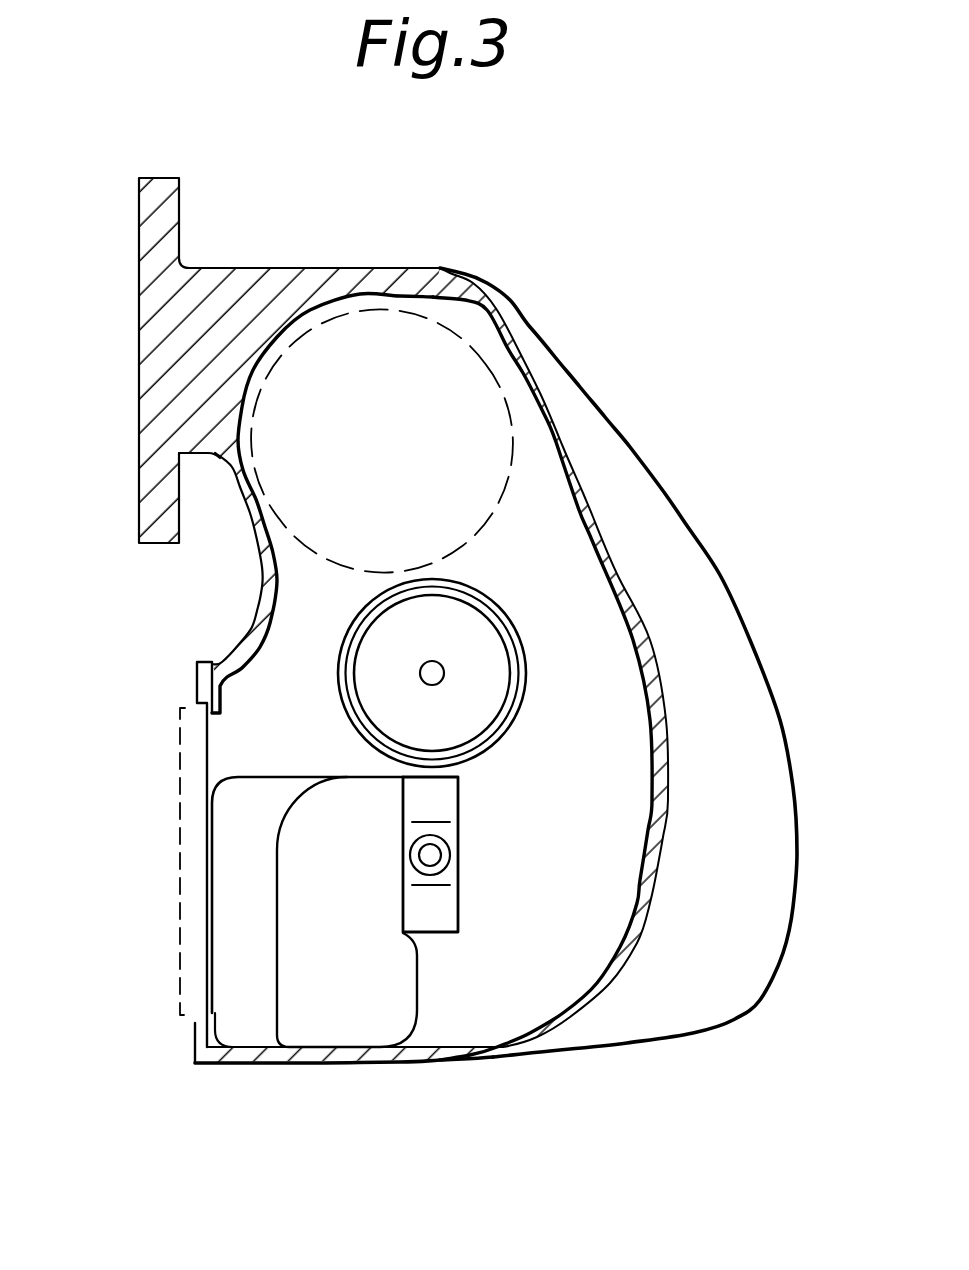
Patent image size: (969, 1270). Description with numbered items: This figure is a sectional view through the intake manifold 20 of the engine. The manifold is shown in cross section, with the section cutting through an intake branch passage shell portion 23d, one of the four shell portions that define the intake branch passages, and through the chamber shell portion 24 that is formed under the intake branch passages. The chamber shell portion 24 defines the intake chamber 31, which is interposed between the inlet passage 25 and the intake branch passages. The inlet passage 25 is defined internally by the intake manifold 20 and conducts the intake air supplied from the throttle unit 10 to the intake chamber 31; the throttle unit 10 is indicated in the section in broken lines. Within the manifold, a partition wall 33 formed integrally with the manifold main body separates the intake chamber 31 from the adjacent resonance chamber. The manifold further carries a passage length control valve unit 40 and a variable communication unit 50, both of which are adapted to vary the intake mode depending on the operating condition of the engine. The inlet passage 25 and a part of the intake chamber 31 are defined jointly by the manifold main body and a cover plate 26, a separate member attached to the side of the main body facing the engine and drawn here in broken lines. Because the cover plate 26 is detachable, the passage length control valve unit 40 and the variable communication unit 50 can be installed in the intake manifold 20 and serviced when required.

The intake manifold 20 is at (556, 222).
The throttle unit 10 is at (478, 338).
The inlet passage 25 is at (565, 528).
The intake branch passage shell portion 23d is at (733, 645).
The variable communication unit 50 is at (327, 663).
The cover plate 26 is at (178, 763).
The passage length control valve unit 40 is at (386, 863).
The partition wall 33 is at (233, 950).
The chamber shell portion 24 is at (301, 1071).
The intake chamber 31 is at (330, 1030).